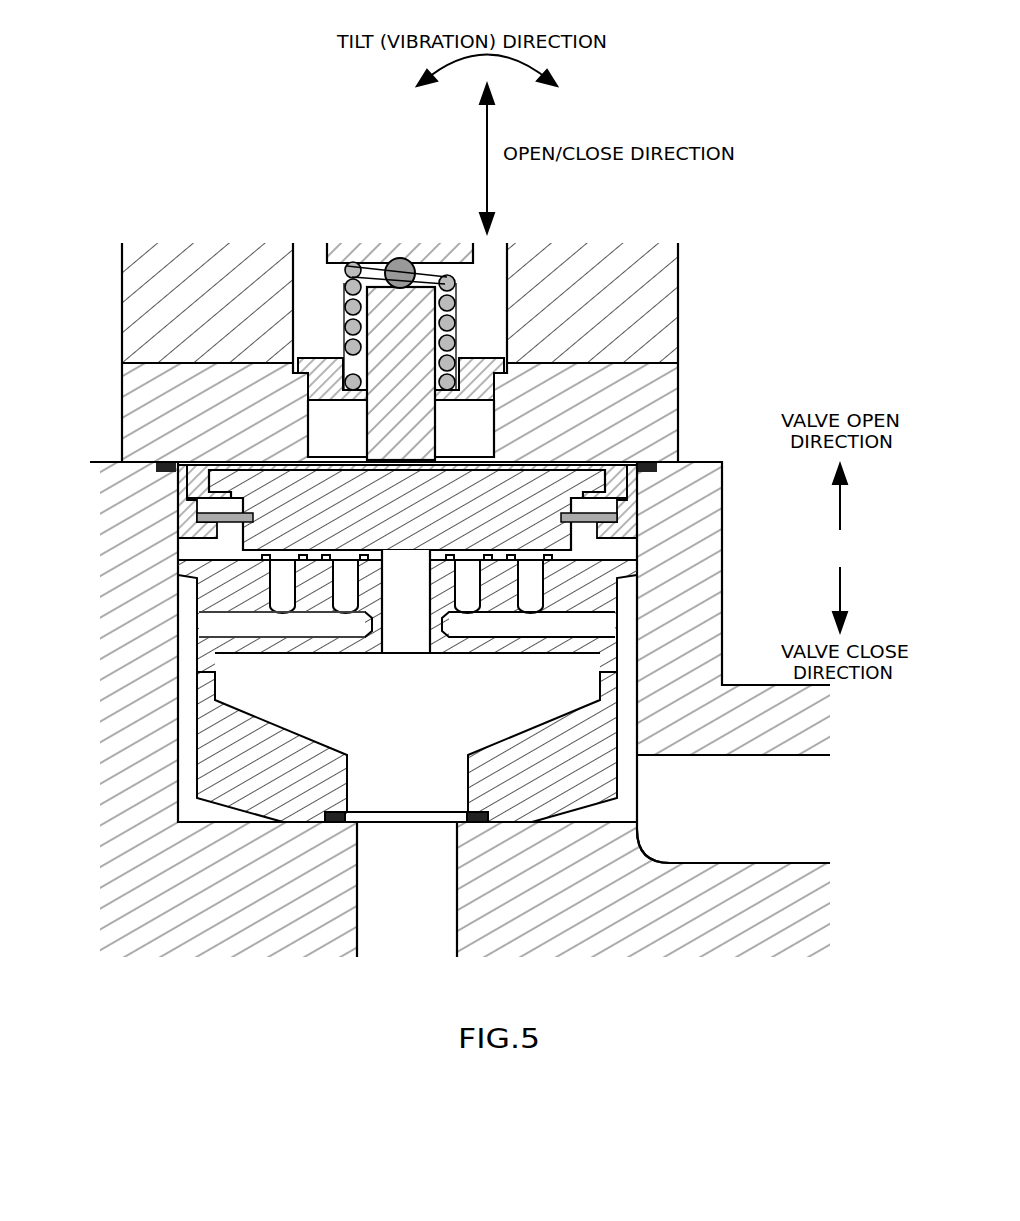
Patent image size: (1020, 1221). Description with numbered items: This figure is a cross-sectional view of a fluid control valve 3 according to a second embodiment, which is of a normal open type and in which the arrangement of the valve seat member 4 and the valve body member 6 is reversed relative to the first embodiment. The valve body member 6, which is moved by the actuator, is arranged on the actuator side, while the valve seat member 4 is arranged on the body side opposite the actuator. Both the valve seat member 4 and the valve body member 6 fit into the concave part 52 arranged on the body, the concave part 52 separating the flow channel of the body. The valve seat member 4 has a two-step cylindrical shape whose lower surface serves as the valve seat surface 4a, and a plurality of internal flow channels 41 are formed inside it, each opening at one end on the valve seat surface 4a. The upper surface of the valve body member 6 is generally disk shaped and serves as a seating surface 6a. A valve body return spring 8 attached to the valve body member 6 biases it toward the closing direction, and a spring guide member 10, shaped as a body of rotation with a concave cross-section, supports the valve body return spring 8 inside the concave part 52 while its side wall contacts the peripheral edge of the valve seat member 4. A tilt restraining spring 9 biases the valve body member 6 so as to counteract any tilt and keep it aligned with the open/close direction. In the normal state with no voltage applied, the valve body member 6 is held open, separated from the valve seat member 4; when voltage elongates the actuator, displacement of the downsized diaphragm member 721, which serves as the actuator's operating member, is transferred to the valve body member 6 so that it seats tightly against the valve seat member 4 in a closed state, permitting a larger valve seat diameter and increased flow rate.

The fluid control valve 3 is at (712, 303).
The diaphragm member 721 is at (463, 458).
The valve seat member 4 is at (196, 603).
The valve seat surface 4a is at (318, 557).
The internal flow channel 41 is at (337, 623).
The valve body member 6 is at (217, 530).
The seating surface 6a is at (409, 564).
The valve body return spring 8 is at (618, 518).
The tilt restraining spring 9 is at (638, 497).
The spring guide member 10 is at (627, 538).
The concave part 52 is at (606, 824).